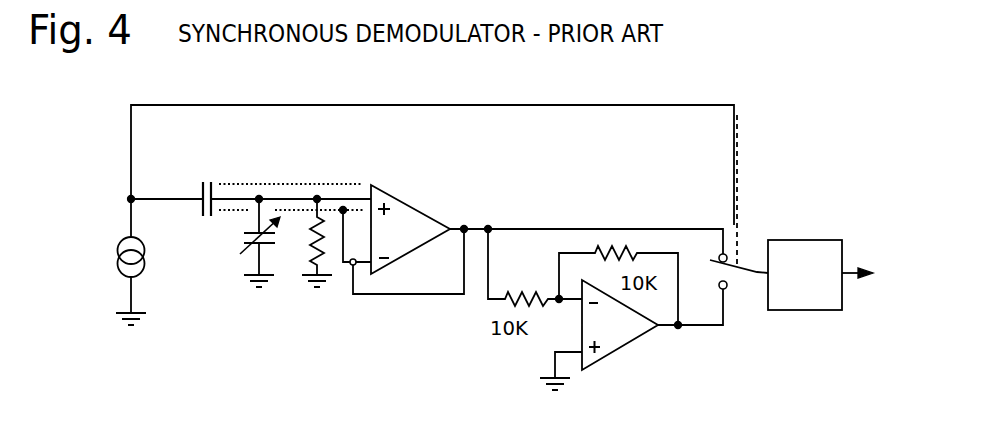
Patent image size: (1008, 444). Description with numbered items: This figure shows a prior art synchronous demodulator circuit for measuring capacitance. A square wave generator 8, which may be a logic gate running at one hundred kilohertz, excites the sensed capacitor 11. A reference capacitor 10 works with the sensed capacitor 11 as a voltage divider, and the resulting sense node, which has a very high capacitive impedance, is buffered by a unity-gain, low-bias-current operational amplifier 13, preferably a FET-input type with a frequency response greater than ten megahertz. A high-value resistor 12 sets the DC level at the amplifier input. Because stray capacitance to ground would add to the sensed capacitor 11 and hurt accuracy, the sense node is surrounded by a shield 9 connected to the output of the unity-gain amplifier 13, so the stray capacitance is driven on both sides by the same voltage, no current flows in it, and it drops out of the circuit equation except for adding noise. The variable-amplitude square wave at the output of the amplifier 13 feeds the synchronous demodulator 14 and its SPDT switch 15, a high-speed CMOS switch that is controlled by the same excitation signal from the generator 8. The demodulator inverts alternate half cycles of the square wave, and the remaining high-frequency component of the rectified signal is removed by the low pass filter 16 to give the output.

The square wave generator 8 is at (112, 223).
The shield 9 is at (310, 179).
The reference capacitor 10 is at (197, 178).
The sensed capacitor 11 is at (240, 253).
The high-value resistor 12 is at (303, 258).
The operational amplifier 13 is at (412, 200).
The synchronous demodulator 14 is at (640, 344).
The SPDT switch 15 is at (737, 292).
The low pass filter 16 is at (803, 320).